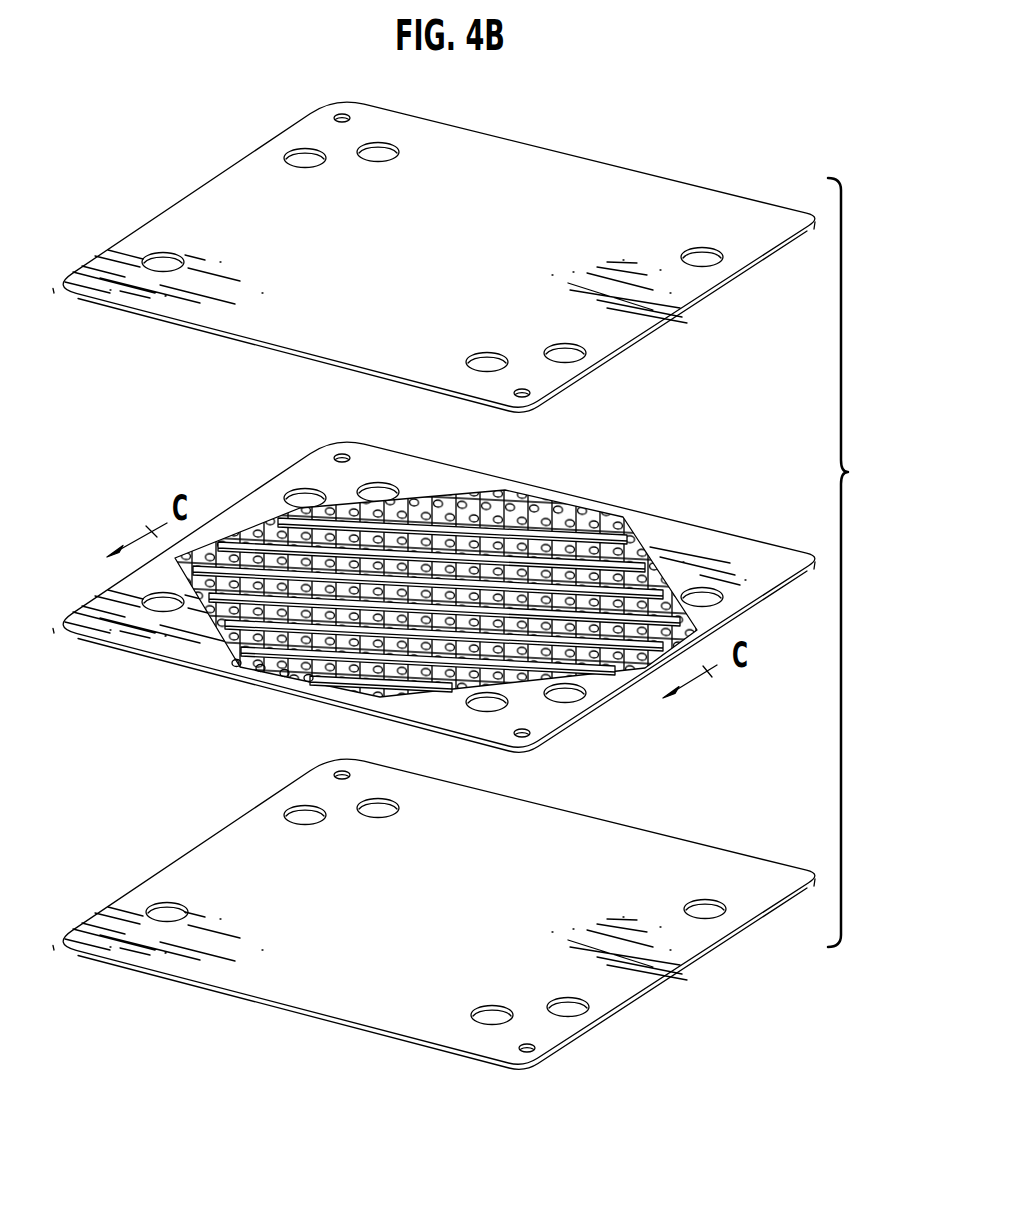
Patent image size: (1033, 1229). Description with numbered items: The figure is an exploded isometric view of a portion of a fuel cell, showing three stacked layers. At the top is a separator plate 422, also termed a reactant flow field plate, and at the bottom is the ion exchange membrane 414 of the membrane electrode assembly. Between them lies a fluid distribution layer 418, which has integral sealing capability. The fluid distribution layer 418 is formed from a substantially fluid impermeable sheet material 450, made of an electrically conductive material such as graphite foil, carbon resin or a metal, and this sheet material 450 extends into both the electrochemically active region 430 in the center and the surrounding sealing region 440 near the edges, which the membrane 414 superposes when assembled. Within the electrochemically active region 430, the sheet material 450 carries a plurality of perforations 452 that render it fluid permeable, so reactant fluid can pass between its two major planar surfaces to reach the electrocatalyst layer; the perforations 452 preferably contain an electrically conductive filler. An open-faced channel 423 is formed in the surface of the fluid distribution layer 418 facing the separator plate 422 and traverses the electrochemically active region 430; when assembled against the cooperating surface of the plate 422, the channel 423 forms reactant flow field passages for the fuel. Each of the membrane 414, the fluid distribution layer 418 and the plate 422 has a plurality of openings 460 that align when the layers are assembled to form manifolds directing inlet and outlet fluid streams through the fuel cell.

The separator plate 422 is at (706, 303).
The substantially fluid impermeable sheet material 450 is at (610, 713).
The sealing region 440 is at (698, 540).
The electrochemically active region 430 is at (624, 520).
The open-faced channel 423 is at (531, 500).
The perforations 452 is at (293, 668).
The fluid distribution layer 418 is at (770, 628).
The ion exchange membrane 414 is at (693, 857).
The openings 460 is at (163, 905).